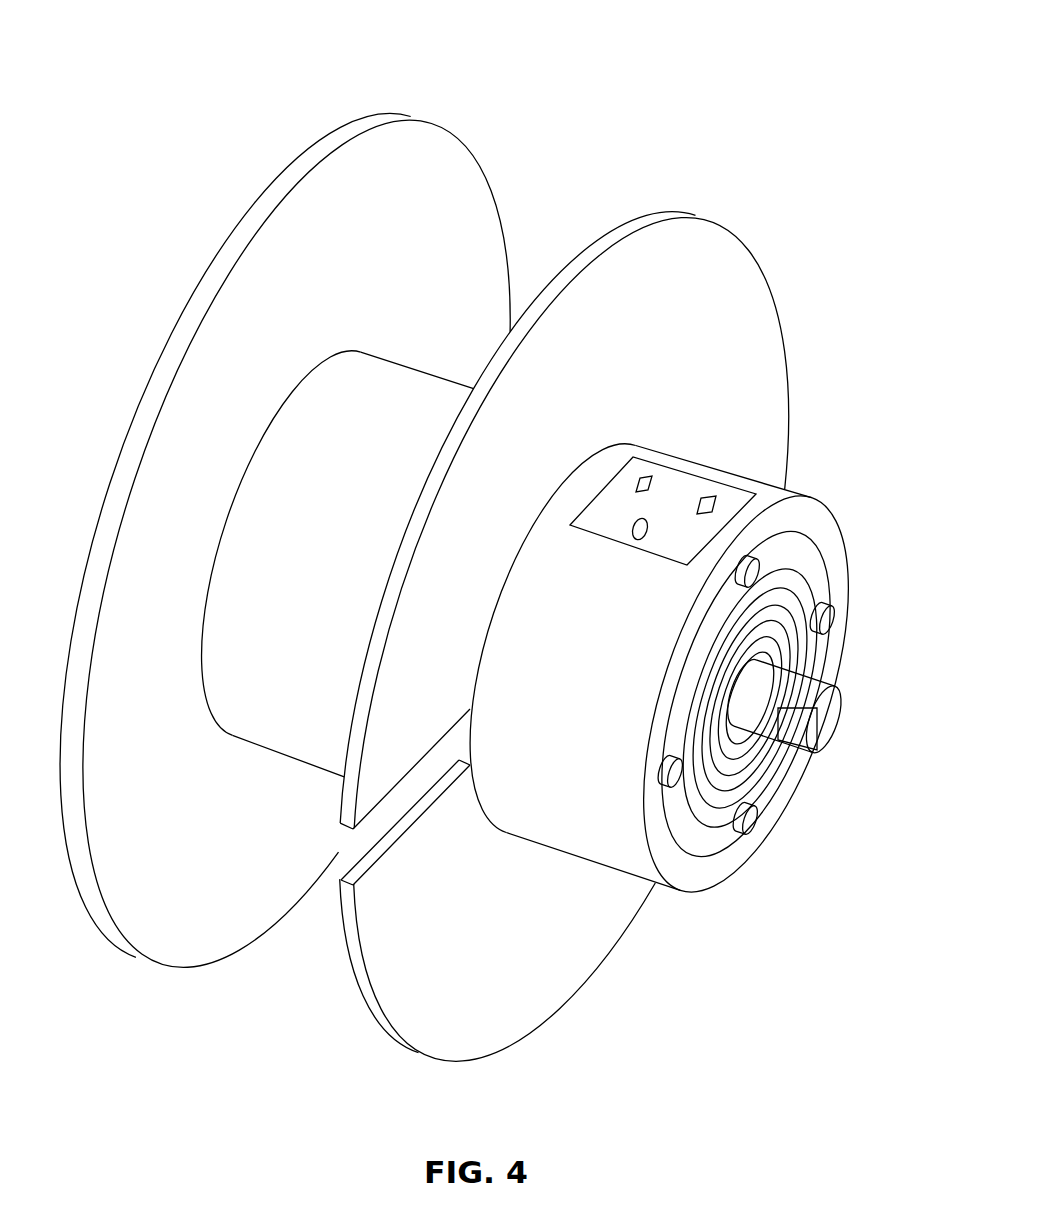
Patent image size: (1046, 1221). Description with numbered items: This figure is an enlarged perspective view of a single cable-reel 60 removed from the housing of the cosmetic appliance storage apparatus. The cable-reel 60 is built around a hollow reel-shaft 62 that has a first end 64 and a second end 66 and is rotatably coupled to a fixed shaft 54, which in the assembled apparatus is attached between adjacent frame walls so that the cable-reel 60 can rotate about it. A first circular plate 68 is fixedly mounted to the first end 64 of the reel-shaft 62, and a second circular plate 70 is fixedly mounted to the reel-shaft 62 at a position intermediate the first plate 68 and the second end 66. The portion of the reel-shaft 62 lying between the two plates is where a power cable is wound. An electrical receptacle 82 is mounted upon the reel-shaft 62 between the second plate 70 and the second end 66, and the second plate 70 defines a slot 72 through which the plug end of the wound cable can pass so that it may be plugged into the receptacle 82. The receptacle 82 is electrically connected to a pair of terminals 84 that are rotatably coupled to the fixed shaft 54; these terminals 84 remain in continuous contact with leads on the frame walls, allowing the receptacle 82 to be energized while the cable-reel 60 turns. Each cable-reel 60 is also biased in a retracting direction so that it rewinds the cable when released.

The cable-reel 60 is at (630, 80).
The first circular plate 68 is at (308, 181).
The second circular plate 70 is at (742, 235).
The reel-shaft 62 is at (338, 497).
The first end 64 is at (210, 570).
The second end 66 is at (722, 890).
The slot 72 is at (412, 833).
The electrical receptacle 82 is at (599, 529).
The terminals 84 is at (748, 743).
The shaft 54 is at (813, 684).